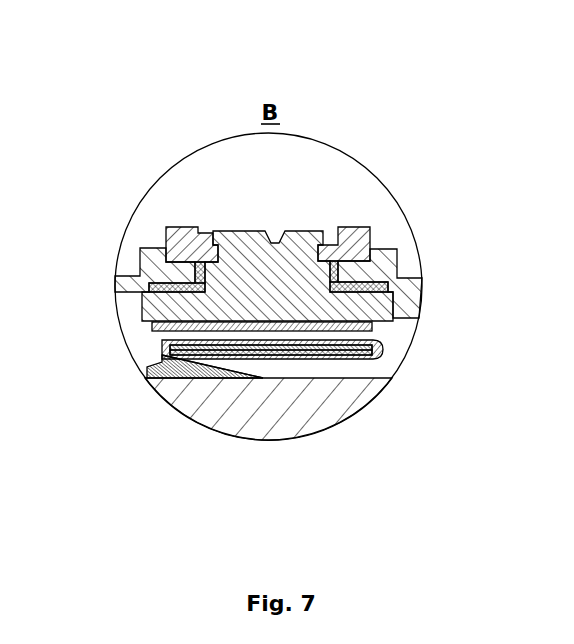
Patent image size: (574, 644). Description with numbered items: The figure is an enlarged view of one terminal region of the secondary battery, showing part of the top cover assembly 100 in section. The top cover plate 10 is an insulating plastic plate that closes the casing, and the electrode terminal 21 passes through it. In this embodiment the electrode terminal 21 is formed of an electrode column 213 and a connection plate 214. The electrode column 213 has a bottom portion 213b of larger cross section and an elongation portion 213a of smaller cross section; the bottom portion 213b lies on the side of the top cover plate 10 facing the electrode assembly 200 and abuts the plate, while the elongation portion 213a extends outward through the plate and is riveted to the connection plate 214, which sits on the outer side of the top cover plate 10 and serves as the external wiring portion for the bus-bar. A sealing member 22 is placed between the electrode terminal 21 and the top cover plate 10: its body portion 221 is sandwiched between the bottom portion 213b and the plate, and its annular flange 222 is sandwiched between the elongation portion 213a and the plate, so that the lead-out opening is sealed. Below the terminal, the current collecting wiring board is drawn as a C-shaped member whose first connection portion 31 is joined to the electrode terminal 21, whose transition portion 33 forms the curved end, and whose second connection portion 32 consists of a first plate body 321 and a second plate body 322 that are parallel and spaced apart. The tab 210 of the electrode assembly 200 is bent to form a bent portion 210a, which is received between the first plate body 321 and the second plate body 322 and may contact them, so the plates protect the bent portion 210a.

The top cover assembly 100 is at (138, 225).
The top cover plate 10 is at (128, 298).
The electrode terminal 21 is at (302, 165).
The electrode column 213 is at (267, 165).
The elongation portion 213a is at (243, 273).
The bottom portion 213b is at (173, 303).
The connection plate 214 is at (352, 248).
The sealing member 22 is at (435, 275).
The body portion 221 is at (388, 290).
The annular flange 222 is at (343, 270).
The first connection portion 31 is at (203, 332).
The second connection portion 32 is at (271, 438).
The first plate body 321 is at (280, 357).
The second plate body 322 is at (320, 342).
The transition portion 33 is at (321, 436).
The electrode assembly 200 is at (338, 393).
The tab 210 is at (167, 419).
The bent portion 210a is at (198, 352).